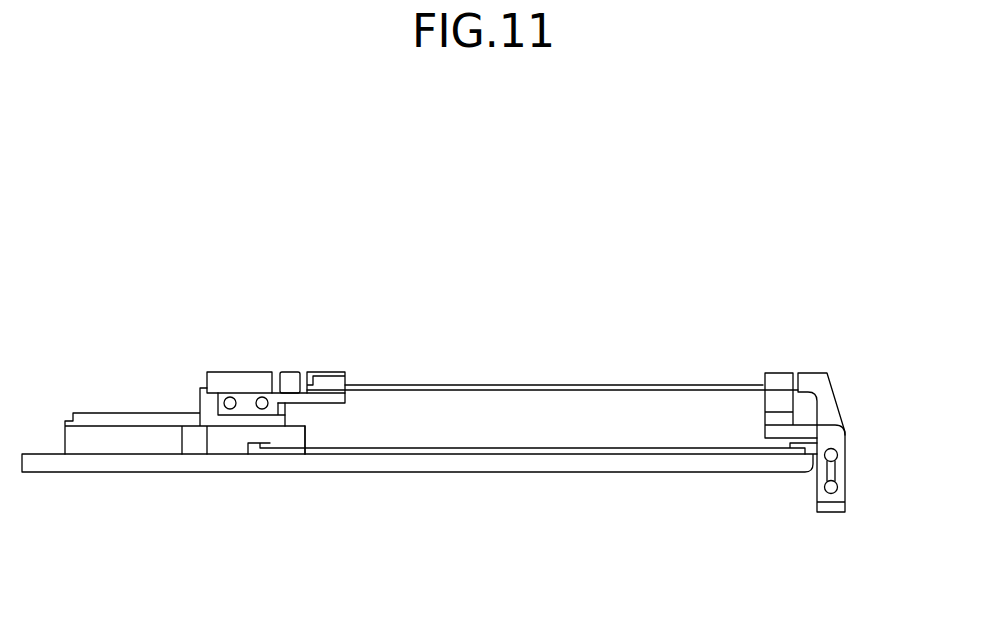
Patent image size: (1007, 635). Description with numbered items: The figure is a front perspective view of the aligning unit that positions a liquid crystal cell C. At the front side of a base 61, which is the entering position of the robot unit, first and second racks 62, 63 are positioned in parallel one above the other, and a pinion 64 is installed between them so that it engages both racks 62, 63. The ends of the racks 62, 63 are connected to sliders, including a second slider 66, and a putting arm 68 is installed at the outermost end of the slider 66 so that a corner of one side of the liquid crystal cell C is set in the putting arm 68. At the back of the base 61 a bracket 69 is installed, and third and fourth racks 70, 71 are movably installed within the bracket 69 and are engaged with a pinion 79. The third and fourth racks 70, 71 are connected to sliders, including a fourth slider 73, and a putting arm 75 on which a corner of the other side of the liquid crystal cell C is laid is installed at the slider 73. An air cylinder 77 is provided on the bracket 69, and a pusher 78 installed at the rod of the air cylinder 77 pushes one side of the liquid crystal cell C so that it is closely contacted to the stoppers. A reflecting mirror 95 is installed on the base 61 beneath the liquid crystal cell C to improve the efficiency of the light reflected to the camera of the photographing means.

The base 61 is at (152, 467).
The first rack 62 is at (837, 452).
The second rack 63 is at (837, 489).
The pinion 64 is at (838, 470).
The second slider 66 is at (822, 382).
The putting arm 68 is at (775, 380).
The bracket 69 is at (150, 414).
The third rack 70 is at (228, 410).
The fourth rack 71 is at (265, 410).
The fourth slider 73 is at (345, 404).
The putting arm 75 is at (325, 380).
The air cylinder 77 is at (237, 380).
The pusher 78 is at (300, 390).
The pinion 79 is at (247, 408).
The reflecting mirror 95 is at (575, 450).
The liquid crystal cell C is at (523, 383).